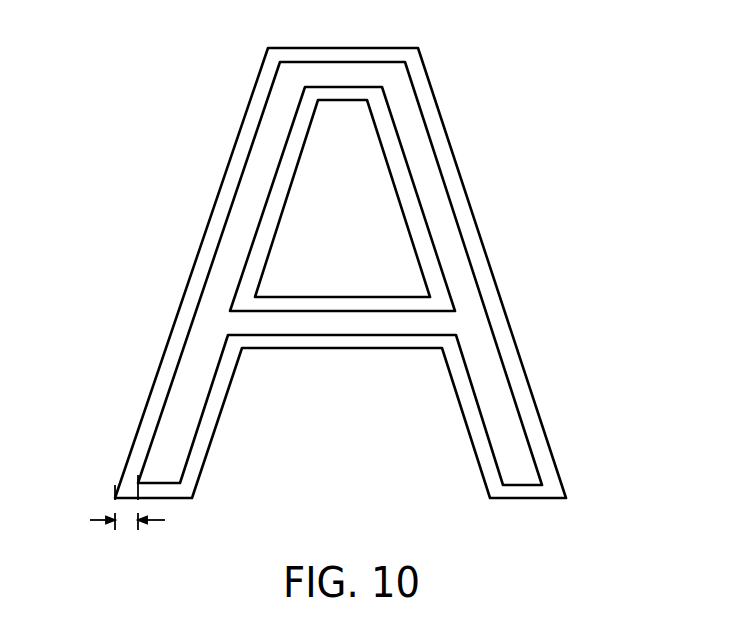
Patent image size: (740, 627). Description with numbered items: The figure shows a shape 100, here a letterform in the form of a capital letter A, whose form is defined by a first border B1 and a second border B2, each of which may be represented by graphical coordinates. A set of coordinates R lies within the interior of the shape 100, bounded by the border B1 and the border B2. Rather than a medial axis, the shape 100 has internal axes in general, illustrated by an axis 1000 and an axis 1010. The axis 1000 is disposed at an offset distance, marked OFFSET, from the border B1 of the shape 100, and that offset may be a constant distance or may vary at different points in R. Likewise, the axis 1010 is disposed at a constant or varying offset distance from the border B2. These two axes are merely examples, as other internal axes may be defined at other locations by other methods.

The shape 100 is at (621, 146).
The first border B1 is at (440, 110).
The second border B2 is at (382, 148).
The set of coordinates R is at (452, 172).
The axis 1000 is at (243, 174).
The axis 1010 is at (247, 237).